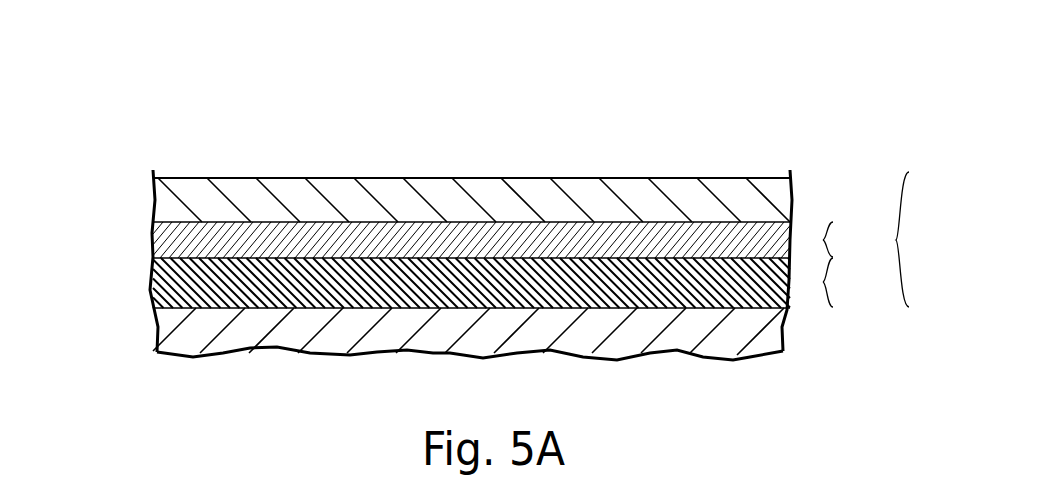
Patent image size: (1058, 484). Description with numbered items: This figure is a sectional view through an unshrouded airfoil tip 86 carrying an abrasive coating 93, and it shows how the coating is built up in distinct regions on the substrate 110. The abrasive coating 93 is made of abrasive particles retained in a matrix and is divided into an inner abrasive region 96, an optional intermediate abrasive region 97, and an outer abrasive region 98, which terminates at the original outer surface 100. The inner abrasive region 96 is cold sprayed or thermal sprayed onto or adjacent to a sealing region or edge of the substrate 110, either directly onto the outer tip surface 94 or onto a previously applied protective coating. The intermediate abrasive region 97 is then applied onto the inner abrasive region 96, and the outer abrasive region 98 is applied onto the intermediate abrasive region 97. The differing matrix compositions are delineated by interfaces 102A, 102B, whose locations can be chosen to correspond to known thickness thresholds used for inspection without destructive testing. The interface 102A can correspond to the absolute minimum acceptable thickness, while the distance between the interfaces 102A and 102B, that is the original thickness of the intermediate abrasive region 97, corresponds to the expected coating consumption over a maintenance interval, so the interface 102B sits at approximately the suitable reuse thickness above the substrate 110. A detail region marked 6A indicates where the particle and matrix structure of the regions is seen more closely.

The airfoil tip 86 is at (846, 185).
The original outer surface 100 is at (663, 177).
The outer abrasive region 98 is at (485, 212).
The intermediate abrasive region 97 is at (381, 250).
The inner abrasive region 96 is at (264, 290).
The outer tip surface 94 is at (152, 307).
The abrasive coating 93 is at (140, 246).
The interface 102A is at (153, 258).
The interface 102B is at (152, 222).
The substrate 110 is at (800, 338).
The section view indicator FIG. 6A is at (510, 128).